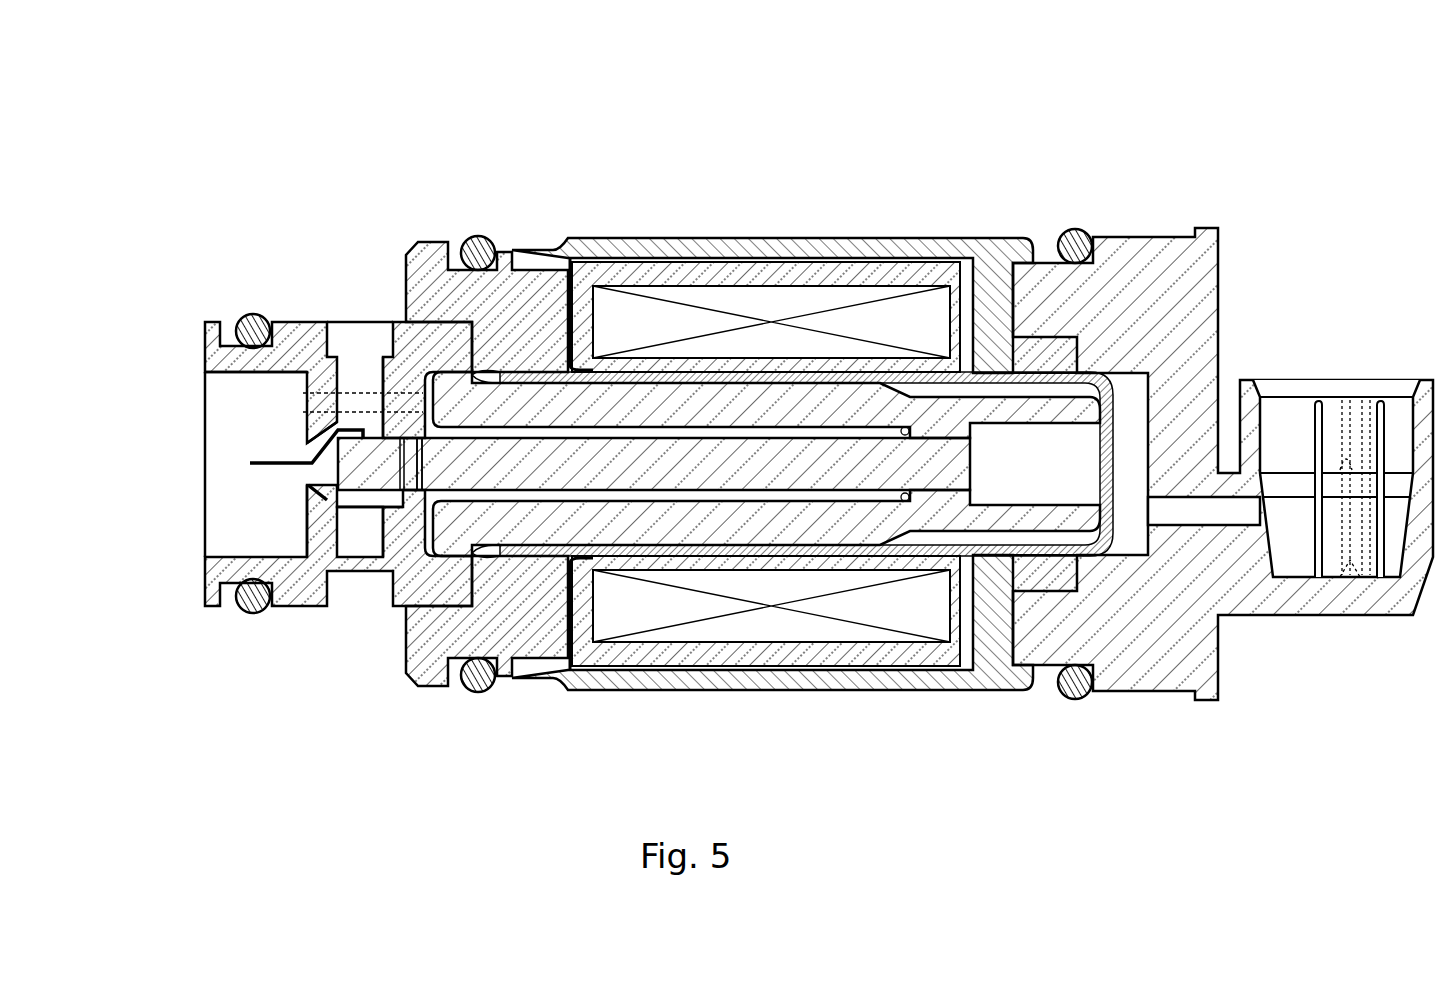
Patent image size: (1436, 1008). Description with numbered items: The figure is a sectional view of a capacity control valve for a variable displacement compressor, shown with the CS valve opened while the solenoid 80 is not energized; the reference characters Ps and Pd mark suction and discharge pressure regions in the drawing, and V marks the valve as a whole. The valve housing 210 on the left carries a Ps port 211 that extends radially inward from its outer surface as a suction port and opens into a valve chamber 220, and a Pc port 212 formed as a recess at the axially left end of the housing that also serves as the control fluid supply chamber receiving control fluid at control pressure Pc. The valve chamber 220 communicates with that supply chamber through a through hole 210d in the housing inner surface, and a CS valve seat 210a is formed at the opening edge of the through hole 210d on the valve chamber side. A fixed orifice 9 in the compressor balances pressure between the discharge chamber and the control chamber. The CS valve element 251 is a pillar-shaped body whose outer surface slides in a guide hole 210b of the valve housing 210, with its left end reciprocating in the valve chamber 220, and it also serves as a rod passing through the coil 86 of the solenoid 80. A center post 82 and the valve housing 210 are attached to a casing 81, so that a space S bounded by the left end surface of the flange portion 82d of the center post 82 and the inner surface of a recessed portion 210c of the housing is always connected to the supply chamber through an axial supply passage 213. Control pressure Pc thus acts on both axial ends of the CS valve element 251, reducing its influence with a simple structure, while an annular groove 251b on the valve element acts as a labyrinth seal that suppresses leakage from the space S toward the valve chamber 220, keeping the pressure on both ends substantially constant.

The valve housing 210 is at (215, 320).
The CS valve seat 210a is at (318, 540).
The guide hole 210b is at (360, 498).
The recessed portion 210c is at (395, 555).
The through hole 210d is at (300, 475).
The Ps port 211 is at (335, 345).
The Pc port 212 is at (265, 373).
The supply passage 213 is at (268, 325).
The valve chamber 220 is at (370, 392).
The CS valve element 251 is at (628, 428).
The annular groove 251b is at (409, 500).
The solenoid 80 is at (1148, 226).
The casing 81 is at (436, 692).
The center post 82 is at (682, 378).
The flange portion 82d is at (479, 236).
The coil 86 is at (818, 600).
The fixed orifice 9 is at (128, 506).
The space S is at (440, 378).
The solenoid valve V is at (1360, 122).
The control pressure Pc is at (204, 465).
The supply pressure Ps is at (358, 437).
The discharge pressure Pd is at (133, 478).